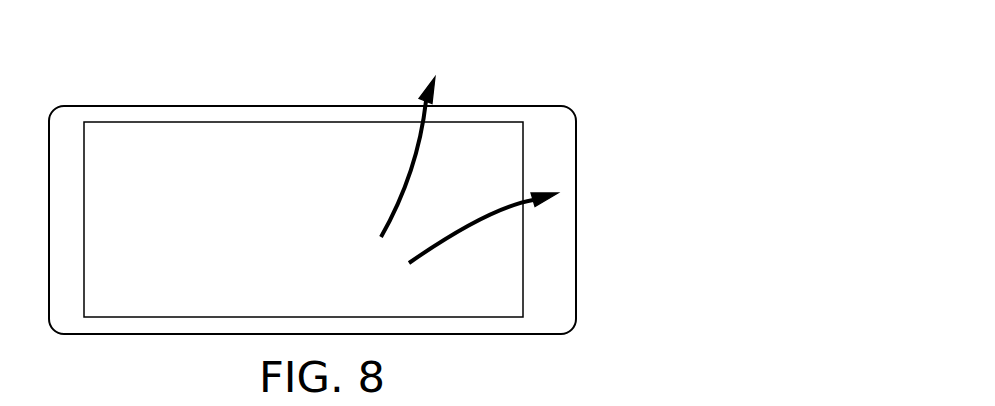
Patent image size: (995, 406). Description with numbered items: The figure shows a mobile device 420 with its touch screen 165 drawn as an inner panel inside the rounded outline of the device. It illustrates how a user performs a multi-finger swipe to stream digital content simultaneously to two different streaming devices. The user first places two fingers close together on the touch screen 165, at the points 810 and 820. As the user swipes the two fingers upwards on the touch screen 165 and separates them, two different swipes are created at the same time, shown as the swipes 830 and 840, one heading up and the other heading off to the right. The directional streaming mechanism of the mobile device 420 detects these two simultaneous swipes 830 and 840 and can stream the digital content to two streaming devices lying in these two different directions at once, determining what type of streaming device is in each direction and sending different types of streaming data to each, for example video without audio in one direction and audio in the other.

The mobile device 420 is at (646, 114).
The touch screen 165 is at (274, 298).
The point 810 is at (380, 236).
The point 820 is at (412, 264).
The swipe 830 is at (413, 176).
The swipe 840 is at (465, 229).